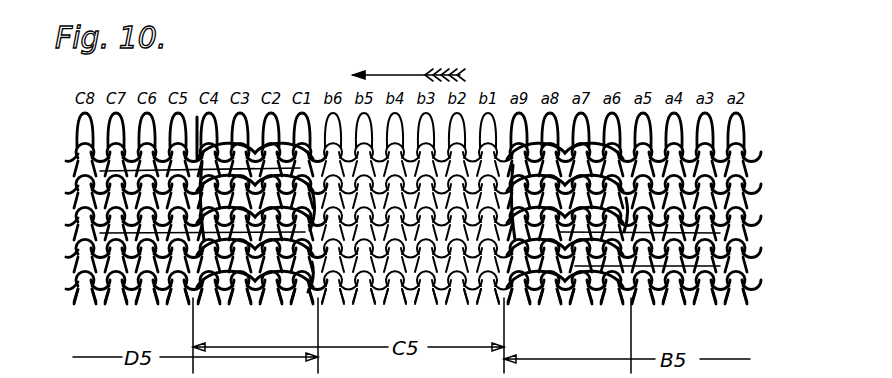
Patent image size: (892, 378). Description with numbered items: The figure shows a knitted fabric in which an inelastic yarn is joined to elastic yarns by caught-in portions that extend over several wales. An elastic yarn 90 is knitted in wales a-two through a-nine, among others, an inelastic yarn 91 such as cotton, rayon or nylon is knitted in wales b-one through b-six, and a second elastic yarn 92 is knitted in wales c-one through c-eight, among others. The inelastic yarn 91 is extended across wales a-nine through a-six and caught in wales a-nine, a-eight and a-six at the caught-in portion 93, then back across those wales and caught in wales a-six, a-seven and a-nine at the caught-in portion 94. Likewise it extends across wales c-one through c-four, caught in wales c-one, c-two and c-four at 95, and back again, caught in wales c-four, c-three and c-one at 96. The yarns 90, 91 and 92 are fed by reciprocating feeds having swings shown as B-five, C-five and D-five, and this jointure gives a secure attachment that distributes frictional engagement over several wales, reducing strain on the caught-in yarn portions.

The elastic yarn 90 is at (655, 294).
The inelastic yarn 91 is at (408, 294).
The elastic yarn 92 is at (128, 294).
The caught-in portion 93 is at (720, 266).
The caught-in portion 94 is at (720, 233).
The caught-in portion 95 is at (100, 233).
The caught-in portion 96 is at (100, 171).